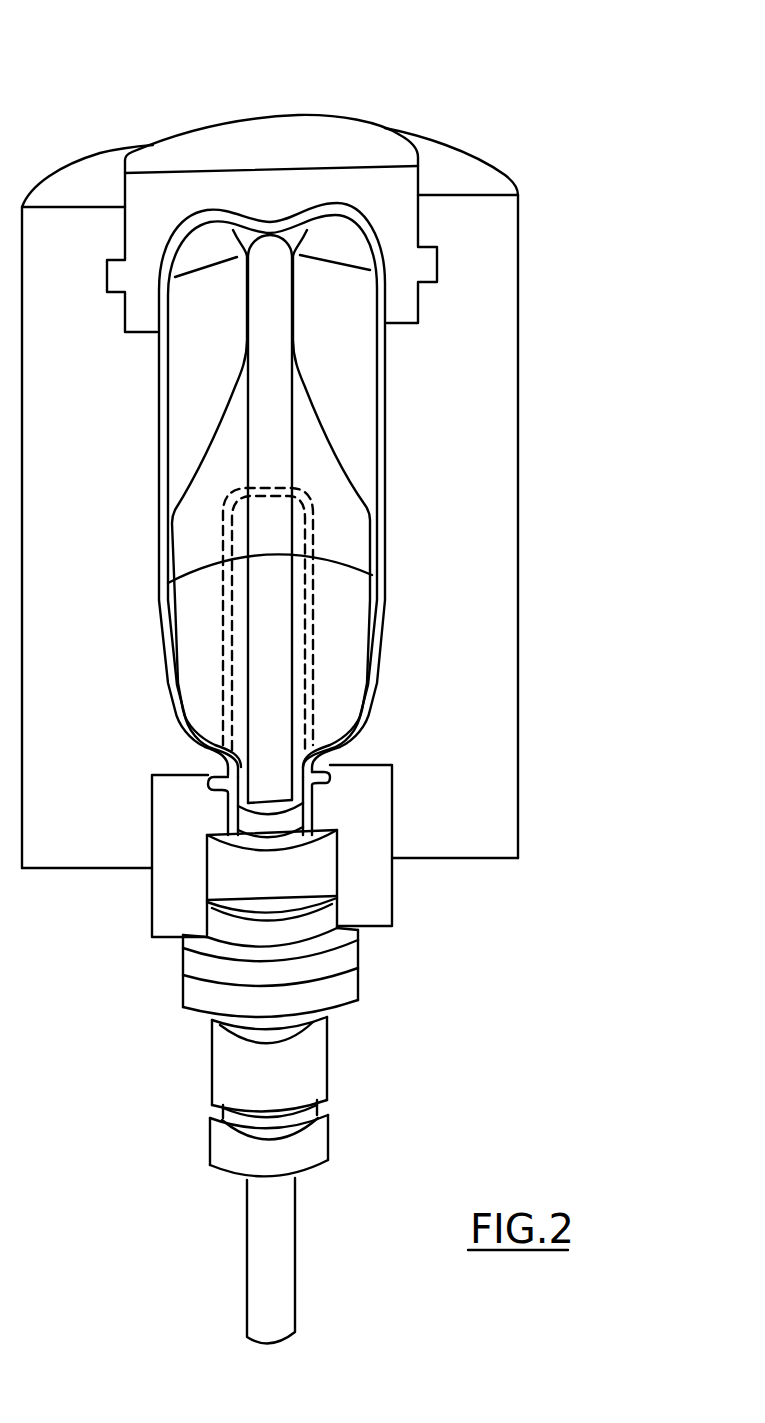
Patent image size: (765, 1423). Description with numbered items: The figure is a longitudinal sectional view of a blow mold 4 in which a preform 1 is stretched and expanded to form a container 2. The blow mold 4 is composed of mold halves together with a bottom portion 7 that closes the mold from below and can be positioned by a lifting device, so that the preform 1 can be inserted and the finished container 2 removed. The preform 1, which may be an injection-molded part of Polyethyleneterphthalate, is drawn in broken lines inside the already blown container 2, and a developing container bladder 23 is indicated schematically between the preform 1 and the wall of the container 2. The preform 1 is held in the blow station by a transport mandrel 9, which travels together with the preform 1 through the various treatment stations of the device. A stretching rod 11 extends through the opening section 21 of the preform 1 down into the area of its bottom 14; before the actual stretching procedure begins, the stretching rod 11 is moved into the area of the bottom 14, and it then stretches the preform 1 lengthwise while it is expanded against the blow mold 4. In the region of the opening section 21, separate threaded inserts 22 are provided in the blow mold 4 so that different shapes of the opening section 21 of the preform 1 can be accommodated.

The bottom portion 7 is at (357, 132).
The blow mold 4 is at (475, 495).
The container 2 is at (385, 428).
The container bladder 23 is at (325, 390).
The bottom 14 is at (297, 490).
The preform 1 is at (308, 650).
The opening section 21 is at (310, 798).
The threaded inserts 22 is at (375, 888).
The transport mandrel 9 is at (347, 997).
The stretching rod 11 is at (237, 1275).